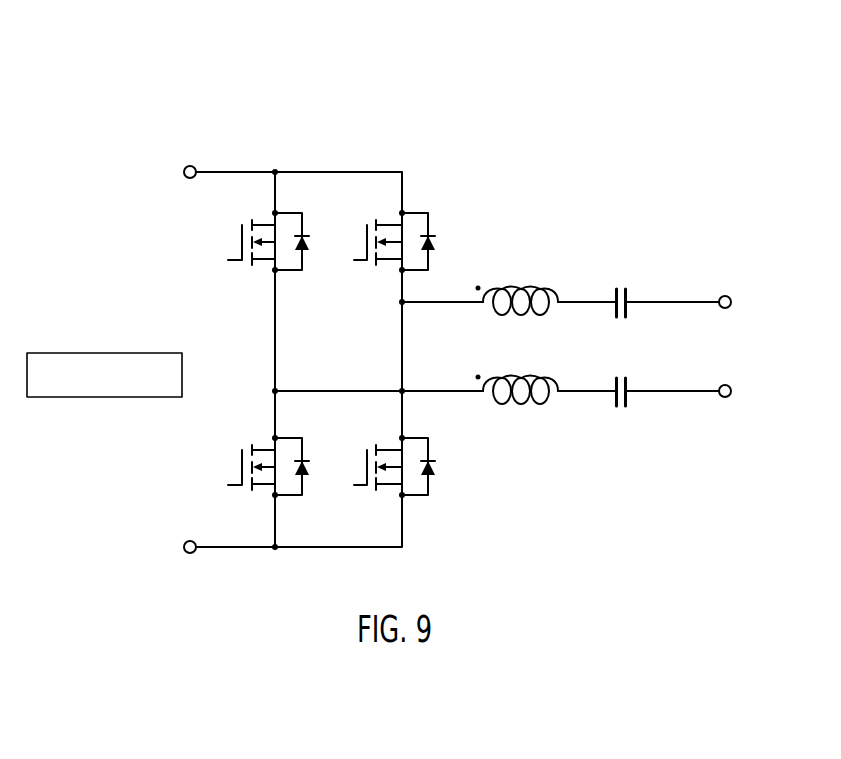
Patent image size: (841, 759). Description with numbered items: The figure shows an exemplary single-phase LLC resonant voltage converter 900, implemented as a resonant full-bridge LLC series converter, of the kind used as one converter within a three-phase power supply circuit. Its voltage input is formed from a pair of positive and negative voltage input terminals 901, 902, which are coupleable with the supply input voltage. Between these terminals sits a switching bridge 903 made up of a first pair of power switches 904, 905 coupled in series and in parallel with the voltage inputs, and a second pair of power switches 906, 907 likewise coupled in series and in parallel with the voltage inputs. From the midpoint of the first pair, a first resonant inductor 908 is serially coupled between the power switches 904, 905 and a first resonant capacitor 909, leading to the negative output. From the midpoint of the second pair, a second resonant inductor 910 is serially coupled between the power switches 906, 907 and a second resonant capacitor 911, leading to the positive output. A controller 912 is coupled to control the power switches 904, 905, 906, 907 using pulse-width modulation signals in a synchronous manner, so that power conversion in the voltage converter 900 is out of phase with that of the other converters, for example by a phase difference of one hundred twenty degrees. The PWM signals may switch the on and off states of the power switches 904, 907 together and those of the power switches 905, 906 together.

The single-phase LLC resonant voltage converter 900 is at (228, 52).
The voltage input terminal DC+ 901 is at (190, 165).
The voltage input terminal DC− 902 is at (190, 540).
The switching bridge 903 is at (333, 137).
The power switch 904 is at (240, 245).
The power switch 905 is at (240, 467).
The power switch 906 is at (365, 247).
The power switch 907 is at (364, 473).
The first resonant inductor 908 is at (499, 405).
The first resonant capacitor 909 is at (615, 404).
The second resonant inductor 910 is at (509, 287).
The second resonant capacitor 911 is at (630, 292).
The controller 912 is at (102, 353).